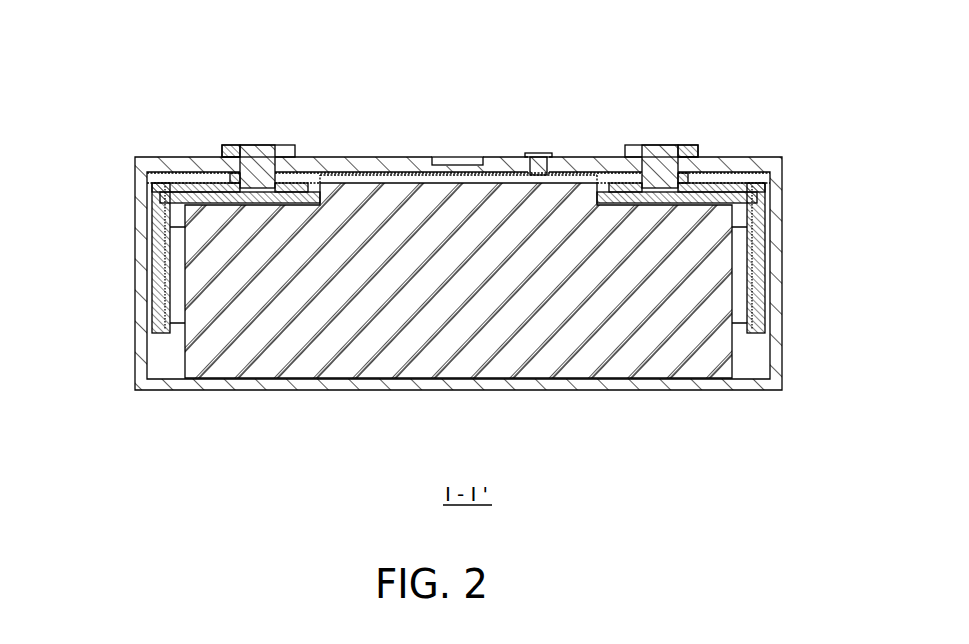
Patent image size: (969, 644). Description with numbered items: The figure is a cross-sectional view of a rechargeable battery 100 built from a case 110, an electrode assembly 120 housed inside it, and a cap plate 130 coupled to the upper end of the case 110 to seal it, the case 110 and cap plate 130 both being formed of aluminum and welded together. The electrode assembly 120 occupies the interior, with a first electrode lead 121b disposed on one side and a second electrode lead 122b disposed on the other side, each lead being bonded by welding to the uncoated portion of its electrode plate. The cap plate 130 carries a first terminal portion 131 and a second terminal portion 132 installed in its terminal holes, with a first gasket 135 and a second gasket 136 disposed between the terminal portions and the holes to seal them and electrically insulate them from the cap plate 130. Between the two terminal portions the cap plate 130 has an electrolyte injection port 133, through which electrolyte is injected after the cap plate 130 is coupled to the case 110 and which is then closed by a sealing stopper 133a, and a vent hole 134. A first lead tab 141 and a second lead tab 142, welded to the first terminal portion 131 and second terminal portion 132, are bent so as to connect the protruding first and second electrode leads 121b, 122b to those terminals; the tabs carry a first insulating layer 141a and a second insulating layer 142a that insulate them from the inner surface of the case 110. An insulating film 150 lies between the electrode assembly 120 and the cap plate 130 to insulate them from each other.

The rechargeable battery 100 is at (131, 60).
The case 110 is at (145, 349).
The electrode assembly 120 is at (432, 342).
The first electrode lead 121b is at (177, 312).
The second electrode lead 122b is at (740, 310).
The cap plate 130 is at (398, 155).
The first terminal portion 131 is at (242, 142).
The second terminal portion 132 is at (687, 142).
The electrolyte injection port 133 is at (561, 135).
The sealing stopper 133a is at (545, 153).
The vent hole 134 is at (462, 157).
The first gasket 135 is at (213, 155).
The second gasket 136 is at (699, 155).
The first lead tab 141 is at (191, 258).
The first insulating layer 141a is at (153, 236).
The second lead tab 142 is at (728, 258).
The second insulating layer 142a is at (763, 255).
The insulating film 150 is at (331, 158).